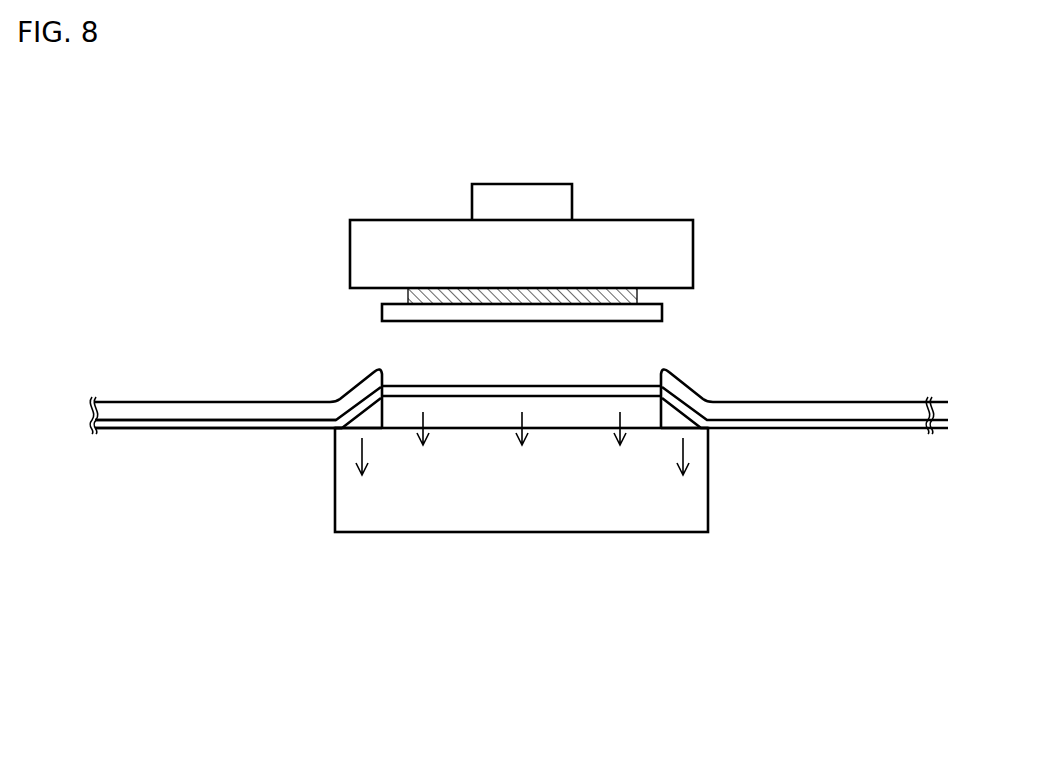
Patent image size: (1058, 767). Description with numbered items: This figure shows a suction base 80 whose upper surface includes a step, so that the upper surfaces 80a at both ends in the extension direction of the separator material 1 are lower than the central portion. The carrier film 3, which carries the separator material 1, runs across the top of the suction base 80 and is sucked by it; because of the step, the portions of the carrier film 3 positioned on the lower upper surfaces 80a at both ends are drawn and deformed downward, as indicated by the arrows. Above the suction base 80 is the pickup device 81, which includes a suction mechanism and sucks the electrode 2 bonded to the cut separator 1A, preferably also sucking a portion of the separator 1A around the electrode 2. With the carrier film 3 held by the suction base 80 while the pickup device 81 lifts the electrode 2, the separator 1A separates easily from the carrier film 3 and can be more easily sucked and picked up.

The separator material 1 is at (212, 402).
The separator 1A is at (662, 311).
The electrode 2 is at (408, 292).
The carrier film 3 is at (240, 429).
The suction base 80 is at (708, 508).
The upper surfaces 80a is at (370, 428).
The pickup device 81 is at (645, 220).